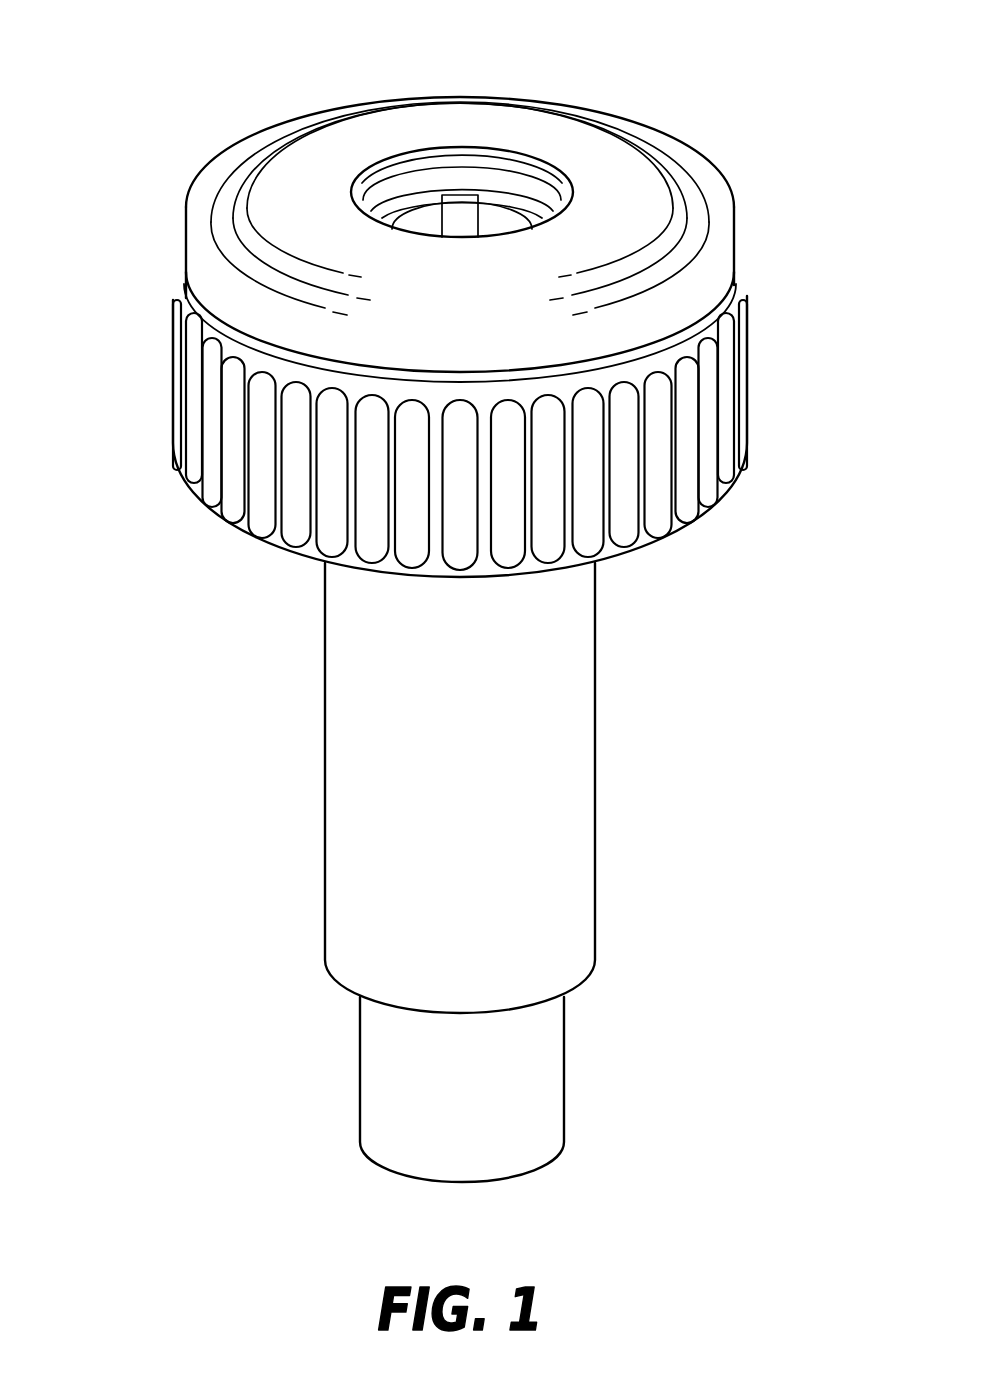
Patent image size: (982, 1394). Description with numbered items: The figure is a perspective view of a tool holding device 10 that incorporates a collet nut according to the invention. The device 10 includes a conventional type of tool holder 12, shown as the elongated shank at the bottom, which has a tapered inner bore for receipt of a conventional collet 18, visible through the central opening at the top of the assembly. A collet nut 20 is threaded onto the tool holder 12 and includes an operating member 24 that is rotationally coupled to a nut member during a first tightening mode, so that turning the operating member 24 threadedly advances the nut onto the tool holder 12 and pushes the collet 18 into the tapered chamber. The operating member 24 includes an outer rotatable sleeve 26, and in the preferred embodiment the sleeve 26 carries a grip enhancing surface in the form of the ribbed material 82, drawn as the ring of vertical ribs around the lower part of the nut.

The tool holding device 10 is at (166, 142).
The tool holder 12 is at (570, 703).
The collet 18 is at (414, 203).
The collet nut 20 is at (285, 155).
The operating member 24 is at (752, 234).
The outer rotatable sleeve 26 is at (186, 247).
The ribbed material 82 is at (730, 363).